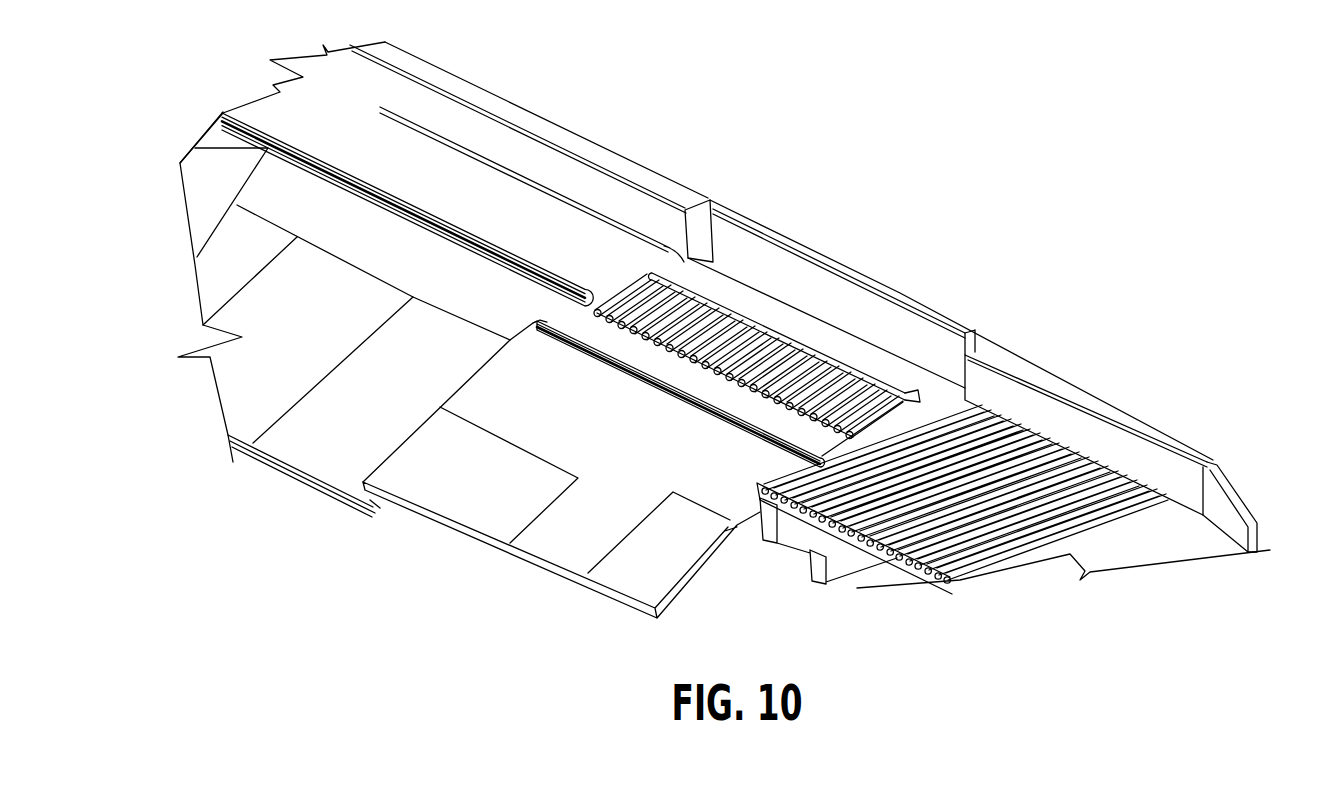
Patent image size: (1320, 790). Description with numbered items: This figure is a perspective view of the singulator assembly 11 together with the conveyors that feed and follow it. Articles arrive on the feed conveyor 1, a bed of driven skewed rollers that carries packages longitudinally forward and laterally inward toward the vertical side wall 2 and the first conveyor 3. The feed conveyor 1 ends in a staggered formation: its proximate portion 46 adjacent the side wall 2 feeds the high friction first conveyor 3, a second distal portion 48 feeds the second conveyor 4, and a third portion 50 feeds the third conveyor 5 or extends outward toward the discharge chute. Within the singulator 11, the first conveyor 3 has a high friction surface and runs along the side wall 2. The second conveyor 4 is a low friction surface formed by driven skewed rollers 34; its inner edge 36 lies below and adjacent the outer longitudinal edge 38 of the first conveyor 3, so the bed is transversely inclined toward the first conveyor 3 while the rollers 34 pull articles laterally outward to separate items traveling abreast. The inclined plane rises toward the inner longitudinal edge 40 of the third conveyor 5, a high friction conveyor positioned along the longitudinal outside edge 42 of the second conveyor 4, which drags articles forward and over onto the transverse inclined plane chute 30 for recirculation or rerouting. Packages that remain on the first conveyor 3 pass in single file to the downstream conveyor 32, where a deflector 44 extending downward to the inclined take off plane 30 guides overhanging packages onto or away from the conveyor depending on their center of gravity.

The feed conveyor 1 is at (1040, 537).
The vertical side wall 2 is at (797, 285).
The first conveyor 3 is at (728, 297).
The second conveyor 4 is at (813, 370).
The third conveyor 5 is at (632, 347).
The singulator conveyor assembly 11 is at (657, 420).
The transverse inclined plane chute 30 is at (495, 403).
The downstream conveyor 32 is at (429, 190).
The rollers 34 is at (723, 350).
The inner edge 36 is at (700, 303).
The outer longitudinal edge 38 is at (918, 392).
The inner longitudinal edge 40 is at (600, 322).
The longitudinal outside edge 42 is at (665, 343).
The deflector 44 is at (195, 191).
The proximate portion 46 is at (980, 400).
The second distal portion 48 is at (920, 413).
The third portion 50 is at (850, 458).